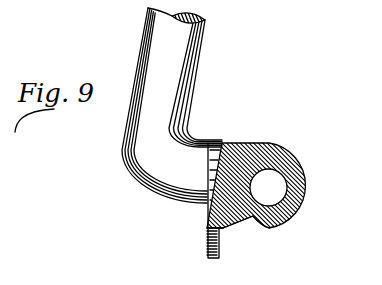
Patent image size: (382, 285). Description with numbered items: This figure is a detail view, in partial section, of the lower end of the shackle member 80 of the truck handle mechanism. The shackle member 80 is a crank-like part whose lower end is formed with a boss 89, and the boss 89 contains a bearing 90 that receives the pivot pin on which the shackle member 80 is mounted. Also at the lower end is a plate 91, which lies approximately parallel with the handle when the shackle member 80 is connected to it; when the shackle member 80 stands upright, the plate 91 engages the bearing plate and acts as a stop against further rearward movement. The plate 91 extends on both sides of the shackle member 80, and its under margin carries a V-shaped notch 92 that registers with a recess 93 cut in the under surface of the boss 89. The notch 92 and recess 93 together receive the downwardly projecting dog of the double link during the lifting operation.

The shackle member 80 is at (186, 125).
The boss 89 is at (271, 144).
The bearing 90 is at (285, 171).
The plate 91 is at (211, 213).
The V-shaped notch 92 is at (226, 233).
The recess 93 is at (251, 228).